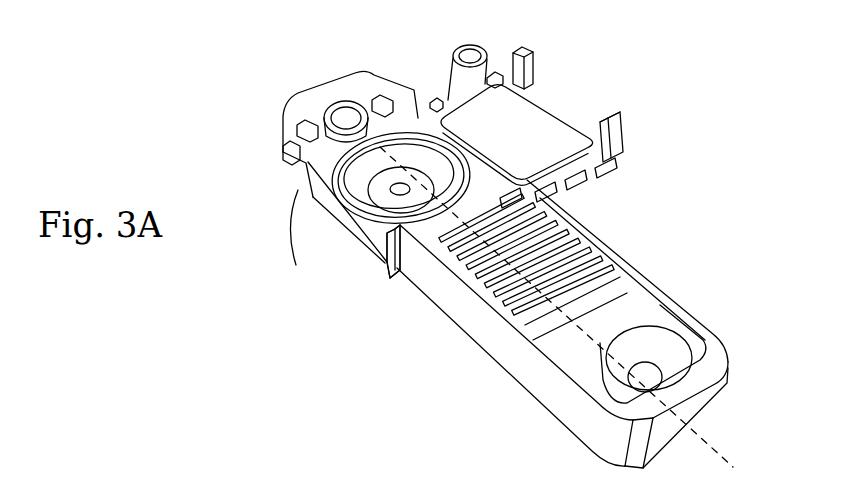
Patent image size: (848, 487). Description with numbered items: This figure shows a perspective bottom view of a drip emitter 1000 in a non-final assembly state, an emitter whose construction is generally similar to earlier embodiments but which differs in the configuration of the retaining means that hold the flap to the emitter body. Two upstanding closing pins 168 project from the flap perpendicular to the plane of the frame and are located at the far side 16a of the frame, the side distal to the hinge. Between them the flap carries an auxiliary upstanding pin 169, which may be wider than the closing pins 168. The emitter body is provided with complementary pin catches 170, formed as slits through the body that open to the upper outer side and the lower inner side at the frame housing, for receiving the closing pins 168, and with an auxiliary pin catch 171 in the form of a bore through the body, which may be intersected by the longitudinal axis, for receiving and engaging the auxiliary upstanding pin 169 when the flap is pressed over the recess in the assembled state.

The emitter 1000 is at (649, 199).
The upstanding closing pins 168 is at (609, 116).
The auxiliary upstanding pin 169 is at (462, 57).
The pin catches 170 is at (392, 272).
The auxiliary pin catch 171 is at (346, 120).
The far side of the frame 16a is at (572, 106).